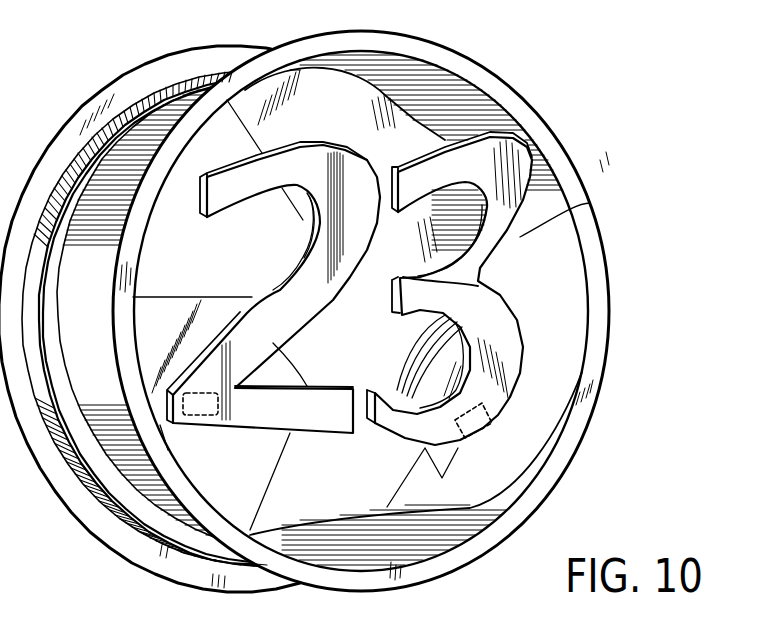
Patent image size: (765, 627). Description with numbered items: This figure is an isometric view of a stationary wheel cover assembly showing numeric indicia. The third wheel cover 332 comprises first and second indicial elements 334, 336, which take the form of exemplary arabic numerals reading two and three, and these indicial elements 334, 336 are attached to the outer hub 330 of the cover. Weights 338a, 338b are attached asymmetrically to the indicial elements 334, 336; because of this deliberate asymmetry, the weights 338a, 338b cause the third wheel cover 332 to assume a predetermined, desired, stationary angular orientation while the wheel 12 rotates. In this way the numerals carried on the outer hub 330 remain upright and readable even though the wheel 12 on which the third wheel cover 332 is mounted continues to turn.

The wheel 12 is at (608, 308).
The outer hub 330 is at (480, 286).
The third wheel cover 332 is at (531, 199).
The first indicial element 334 is at (272, 295).
The second indicial element 336 is at (590, 203).
The weight 338a is at (203, 415).
The weight 338b is at (492, 423).